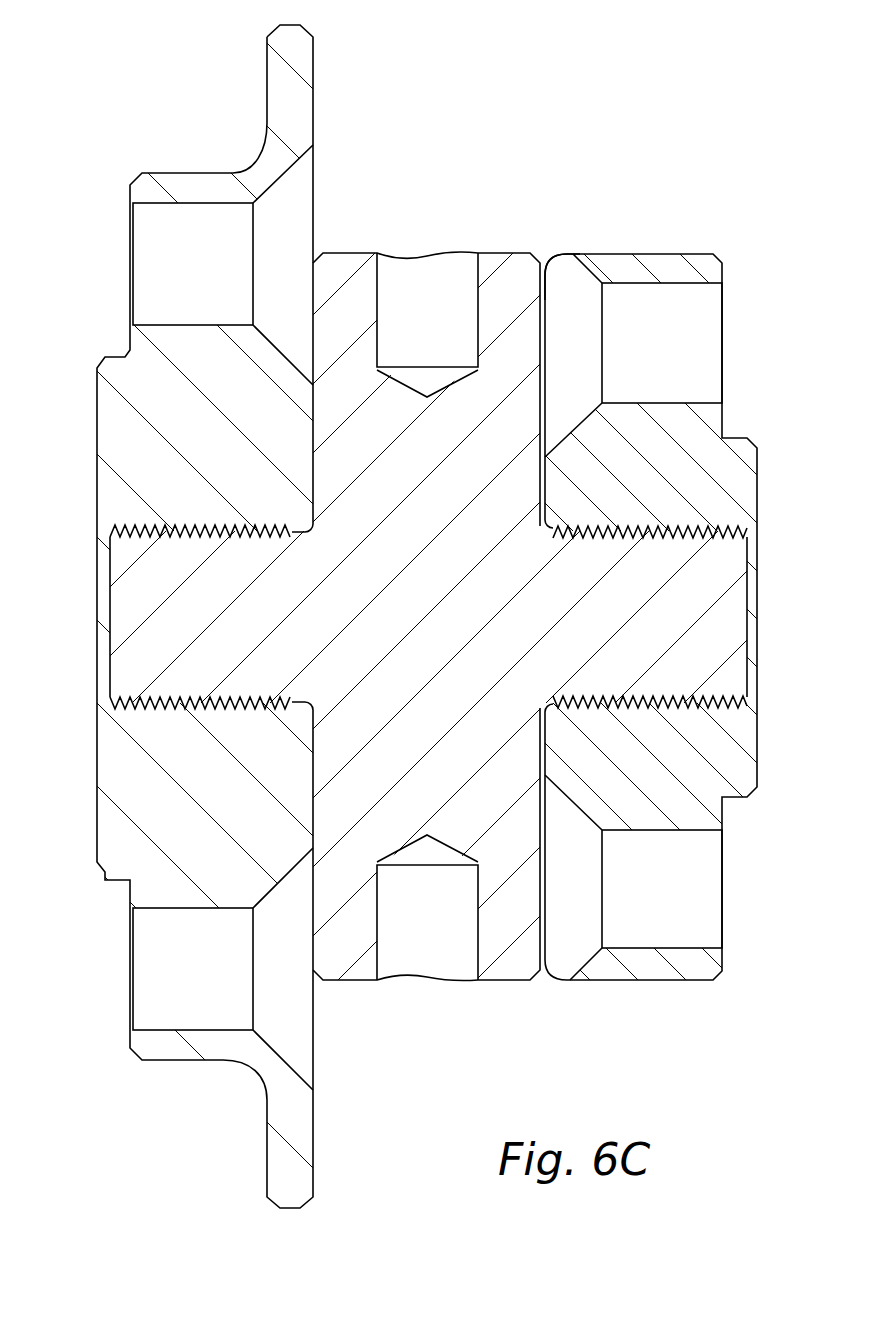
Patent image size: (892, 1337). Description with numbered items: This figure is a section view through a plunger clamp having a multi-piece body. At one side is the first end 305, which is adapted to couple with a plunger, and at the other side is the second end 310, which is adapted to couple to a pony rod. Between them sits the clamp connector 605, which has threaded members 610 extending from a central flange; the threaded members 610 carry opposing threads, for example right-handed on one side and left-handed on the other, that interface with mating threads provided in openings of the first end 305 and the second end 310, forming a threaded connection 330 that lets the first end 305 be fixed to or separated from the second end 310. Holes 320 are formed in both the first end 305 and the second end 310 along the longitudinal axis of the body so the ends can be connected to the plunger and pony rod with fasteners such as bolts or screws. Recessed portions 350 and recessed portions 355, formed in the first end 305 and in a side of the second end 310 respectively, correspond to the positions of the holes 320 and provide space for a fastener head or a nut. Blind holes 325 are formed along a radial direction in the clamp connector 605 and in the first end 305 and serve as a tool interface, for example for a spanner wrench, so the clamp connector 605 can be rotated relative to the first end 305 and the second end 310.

The first end 305 is at (657, 982).
The second end 310 is at (182, 1063).
The holes 320 is at (157, 266).
The blind holes 325 is at (421, 270).
The threaded connection 330 is at (178, 551).
The recessed portions 350 is at (571, 276).
The recessed portions 355 is at (300, 203).
The clamp connector 605 is at (495, 982).
The threaded members 610 is at (122, 663).